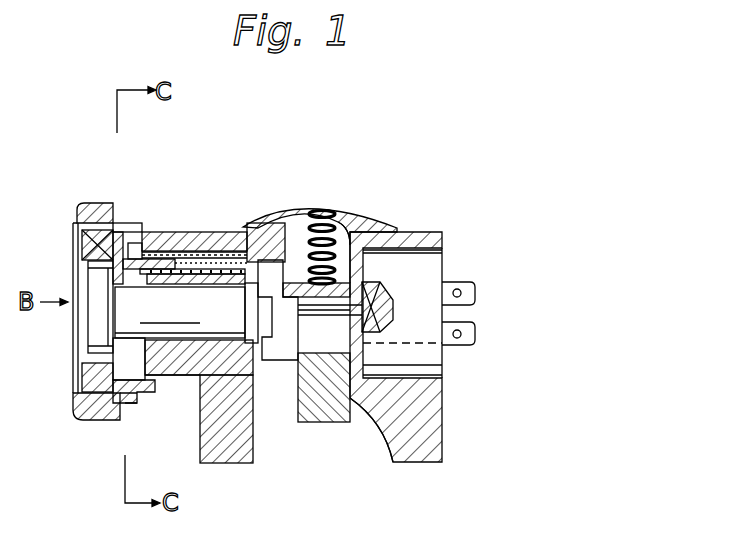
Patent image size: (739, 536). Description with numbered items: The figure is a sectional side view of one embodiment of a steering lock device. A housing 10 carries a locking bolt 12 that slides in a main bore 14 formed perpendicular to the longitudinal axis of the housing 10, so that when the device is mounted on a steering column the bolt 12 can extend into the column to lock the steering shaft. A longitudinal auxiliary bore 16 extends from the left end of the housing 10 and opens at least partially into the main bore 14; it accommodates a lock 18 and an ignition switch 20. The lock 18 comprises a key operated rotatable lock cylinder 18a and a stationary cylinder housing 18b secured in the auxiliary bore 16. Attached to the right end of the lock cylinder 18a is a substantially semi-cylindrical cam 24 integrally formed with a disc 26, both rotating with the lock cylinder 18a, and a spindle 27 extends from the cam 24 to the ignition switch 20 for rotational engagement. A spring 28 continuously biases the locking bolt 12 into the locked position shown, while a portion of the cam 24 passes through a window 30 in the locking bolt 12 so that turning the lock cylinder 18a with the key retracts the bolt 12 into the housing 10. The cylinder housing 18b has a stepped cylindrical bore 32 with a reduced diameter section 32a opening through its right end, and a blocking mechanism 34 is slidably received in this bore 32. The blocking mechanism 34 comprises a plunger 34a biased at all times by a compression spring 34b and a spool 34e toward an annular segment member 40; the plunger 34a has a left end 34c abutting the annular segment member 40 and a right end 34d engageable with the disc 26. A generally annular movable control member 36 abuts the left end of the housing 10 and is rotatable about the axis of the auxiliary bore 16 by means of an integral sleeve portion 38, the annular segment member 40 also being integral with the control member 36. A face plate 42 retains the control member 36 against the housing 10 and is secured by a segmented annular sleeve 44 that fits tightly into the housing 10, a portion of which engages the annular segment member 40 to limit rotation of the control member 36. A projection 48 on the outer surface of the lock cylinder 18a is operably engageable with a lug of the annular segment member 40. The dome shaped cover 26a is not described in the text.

The housing 10 is at (428, 232).
The locking bolt 12 is at (316, 412).
The main bore 14 is at (361, 230).
The auxiliary bore 16 is at (205, 372).
The lock 18 is at (182, 363).
The lock cylinder 18a is at (215, 320).
The cylinder housing 18b is at (204, 368).
The ignition switch 20 is at (433, 355).
The cam 24 is at (273, 352).
The disc 26 is at (233, 372).
The dome cover 26a is at (291, 216).
The spindle 27 is at (368, 332).
The spring 28 is at (310, 234).
The window 30 is at (338, 352).
The stepped cylindrical bore 32 is at (164, 251).
The reduced diameter section 32a is at (242, 254).
The blocking mechanism 34 is at (202, 242).
The plunger 34a is at (147, 250).
The compression spring 34b is at (220, 254).
The left end 34c is at (125, 247).
The right end 34d is at (256, 257).
The spool 34e is at (179, 255).
The control member 36 is at (99, 428).
The sleeve portion 38 is at (137, 404).
The annular segment member 40 is at (92, 224).
The face plate 42 is at (80, 388).
The segmented annular sleeve 44 is at (93, 370).
The projection 48 is at (97, 278).